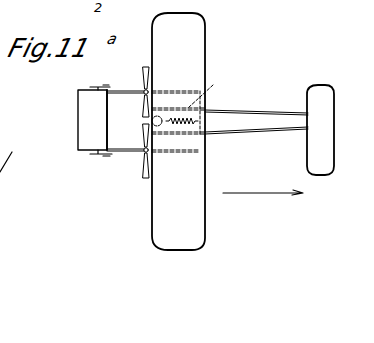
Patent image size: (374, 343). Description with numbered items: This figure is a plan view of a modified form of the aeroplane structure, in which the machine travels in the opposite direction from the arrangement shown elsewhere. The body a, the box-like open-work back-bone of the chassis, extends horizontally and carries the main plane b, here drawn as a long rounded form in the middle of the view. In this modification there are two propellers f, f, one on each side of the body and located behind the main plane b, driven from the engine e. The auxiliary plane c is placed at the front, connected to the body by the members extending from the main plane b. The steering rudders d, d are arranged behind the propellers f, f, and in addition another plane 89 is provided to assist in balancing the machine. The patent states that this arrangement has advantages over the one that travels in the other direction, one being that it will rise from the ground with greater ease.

The body a is at (256, 112).
The main plane b is at (178, 131).
The auxiliary plane c is at (320, 130).
The vertical rudders d is at (101, 123).
The engine e is at (207, 90).
The propeller f is at (143, 80).
The plane 89 is at (89, 131).